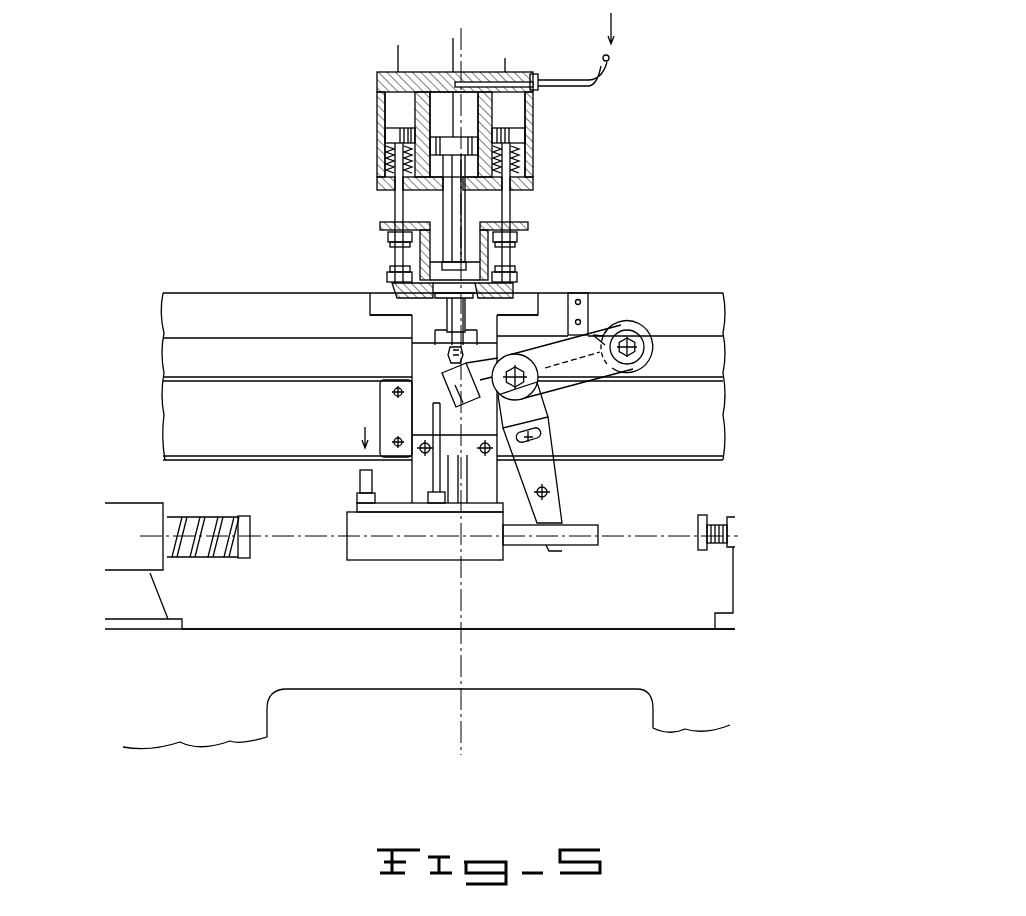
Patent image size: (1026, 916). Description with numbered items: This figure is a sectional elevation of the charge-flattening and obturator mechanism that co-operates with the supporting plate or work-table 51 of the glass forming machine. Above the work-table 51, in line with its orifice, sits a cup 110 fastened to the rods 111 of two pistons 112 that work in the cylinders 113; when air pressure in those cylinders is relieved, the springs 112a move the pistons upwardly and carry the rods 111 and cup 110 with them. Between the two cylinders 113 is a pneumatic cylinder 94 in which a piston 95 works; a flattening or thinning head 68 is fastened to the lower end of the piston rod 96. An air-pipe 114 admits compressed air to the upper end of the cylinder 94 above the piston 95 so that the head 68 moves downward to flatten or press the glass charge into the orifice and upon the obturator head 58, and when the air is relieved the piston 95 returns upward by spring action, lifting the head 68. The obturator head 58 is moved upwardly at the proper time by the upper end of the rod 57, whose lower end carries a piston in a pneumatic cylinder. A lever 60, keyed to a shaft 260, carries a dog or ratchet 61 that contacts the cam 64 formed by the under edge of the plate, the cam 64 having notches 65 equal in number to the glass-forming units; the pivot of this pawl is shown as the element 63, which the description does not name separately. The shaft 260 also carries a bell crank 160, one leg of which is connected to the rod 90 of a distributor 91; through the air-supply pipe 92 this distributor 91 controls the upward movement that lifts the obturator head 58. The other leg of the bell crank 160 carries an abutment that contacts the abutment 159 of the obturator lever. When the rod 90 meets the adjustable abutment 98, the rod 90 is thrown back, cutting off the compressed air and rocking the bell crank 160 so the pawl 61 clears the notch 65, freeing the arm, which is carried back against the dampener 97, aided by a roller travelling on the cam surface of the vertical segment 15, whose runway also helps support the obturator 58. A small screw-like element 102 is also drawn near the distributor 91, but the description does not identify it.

The vertical segment 15 is at (560, 640).
The work-table 51 is at (522, 290).
The rod 57 is at (448, 345).
The obturator head 58 is at (440, 297).
The lever 60 is at (568, 378).
The dog or ratchet 61 is at (600, 323).
The cam 63 is at (653, 362).
The cam 64 is at (702, 333).
The notches 65 is at (647, 337).
The flattening or thinning head 68 is at (443, 263).
The rod 90 is at (590, 545).
The distributor 91 is at (492, 556).
The air-supply pipe 92 is at (433, 405).
The pneumatic cylinder 94 is at (458, 92).
The piston 95 is at (400, 163).
The piston rod 96 is at (450, 193).
The dampener 97 is at (243, 557).
The adjustable abutment 98 is at (702, 552).
The stop screw 102 is at (360, 480).
The cup 110 is at (487, 256).
The rods 111 is at (393, 210).
The pistons 112 is at (390, 138).
The springs 112a is at (395, 158).
The cylinders 113 is at (390, 108).
The air-pipe 114 is at (612, 66).
The abutment 159 is at (442, 365).
The bell crank 160 is at (552, 470).
The shaft 260 is at (523, 386).